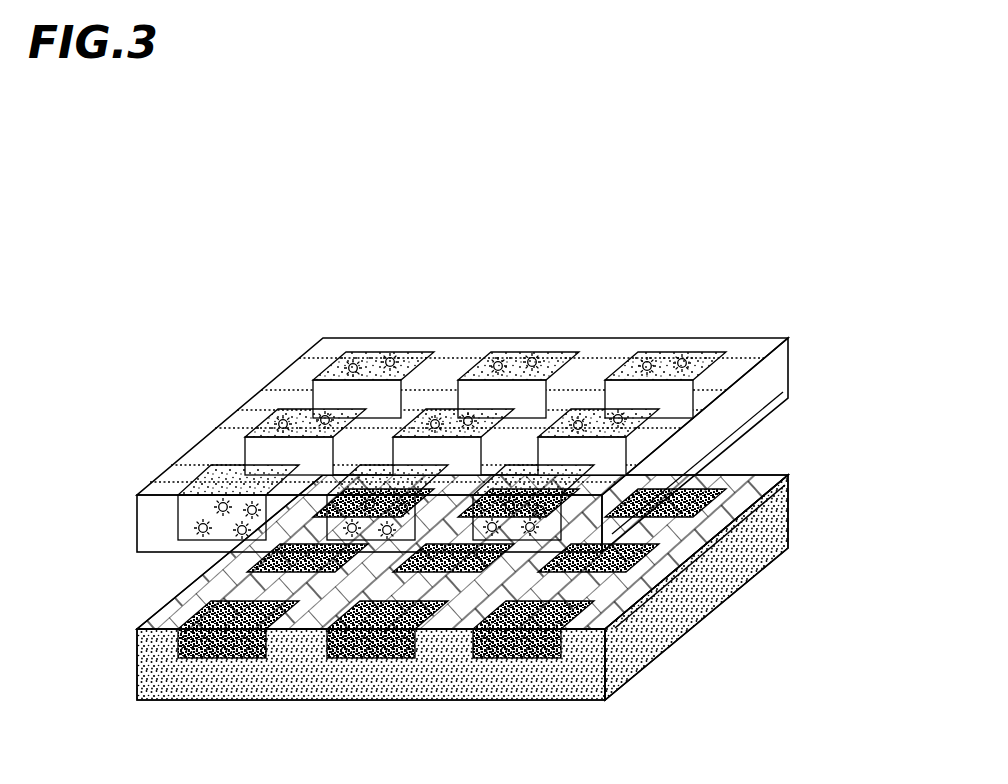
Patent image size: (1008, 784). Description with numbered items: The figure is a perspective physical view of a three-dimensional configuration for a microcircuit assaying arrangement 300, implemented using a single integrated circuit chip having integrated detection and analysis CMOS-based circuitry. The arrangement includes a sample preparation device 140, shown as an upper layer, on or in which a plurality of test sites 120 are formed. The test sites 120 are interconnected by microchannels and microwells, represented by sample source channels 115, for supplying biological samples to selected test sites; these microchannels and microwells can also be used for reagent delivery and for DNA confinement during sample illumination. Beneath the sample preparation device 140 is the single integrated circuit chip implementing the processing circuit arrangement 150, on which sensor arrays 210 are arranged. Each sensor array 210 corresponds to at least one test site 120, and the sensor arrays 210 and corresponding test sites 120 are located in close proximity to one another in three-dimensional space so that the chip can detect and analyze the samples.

The microcircuit assaying arrangement 300 is at (261, 258).
The sample source channels 115 is at (449, 357).
The test sites 120 is at (534, 356).
The sample preparation device 140 is at (738, 426).
The sensor arrays 210 is at (190, 612).
The processing circuit arrangement 150 is at (664, 642).